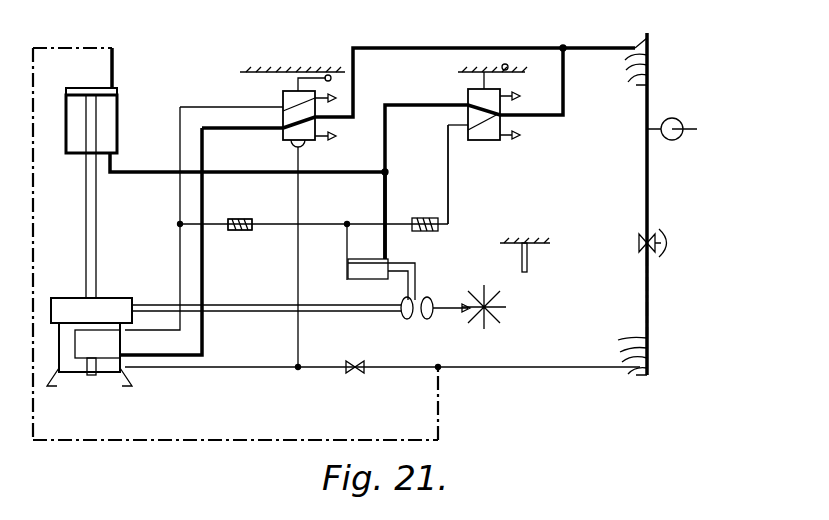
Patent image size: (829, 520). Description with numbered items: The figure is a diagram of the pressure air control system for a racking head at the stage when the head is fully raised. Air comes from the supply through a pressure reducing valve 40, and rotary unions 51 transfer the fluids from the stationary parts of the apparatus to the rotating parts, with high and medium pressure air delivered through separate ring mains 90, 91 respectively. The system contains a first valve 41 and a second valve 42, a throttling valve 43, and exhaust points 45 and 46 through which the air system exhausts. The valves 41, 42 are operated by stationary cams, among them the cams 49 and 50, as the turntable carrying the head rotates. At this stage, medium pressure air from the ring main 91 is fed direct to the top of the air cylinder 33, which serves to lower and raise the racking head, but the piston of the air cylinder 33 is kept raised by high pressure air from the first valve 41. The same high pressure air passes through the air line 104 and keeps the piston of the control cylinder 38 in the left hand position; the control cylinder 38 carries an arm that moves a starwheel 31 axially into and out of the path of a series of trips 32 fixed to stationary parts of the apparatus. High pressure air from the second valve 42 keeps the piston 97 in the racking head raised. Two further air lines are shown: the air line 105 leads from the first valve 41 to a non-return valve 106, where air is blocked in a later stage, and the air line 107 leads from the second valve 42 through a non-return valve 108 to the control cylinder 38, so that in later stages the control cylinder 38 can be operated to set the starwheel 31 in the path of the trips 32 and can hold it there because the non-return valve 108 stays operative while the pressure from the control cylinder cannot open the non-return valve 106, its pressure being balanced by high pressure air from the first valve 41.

The starwheel 31 is at (502, 322).
The trips 32 is at (527, 265).
The air cylinder 33 is at (106, 112).
The control cylinder 38 is at (362, 277).
The pressure reducing valve 40 is at (639, 240).
The first valve 41 is at (490, 134).
The second valve 42 is at (286, 128).
The throttling valve 43 is at (352, 374).
The exhaust point 45 is at (520, 96).
The exhaust point 46 is at (520, 135).
The cam 49 is at (278, 68).
The cam 50 is at (470, 68).
The rotary union 51 is at (650, 129).
The ring main 90 is at (632, 66).
The ring main 91 is at (624, 344).
The piston 97 is at (97, 336).
The air line 104 is at (385, 200).
The air line 105 is at (448, 184).
The non-return valve 106 is at (426, 231).
The air line 107 is at (226, 223).
The non-return valve 108 is at (252, 229).